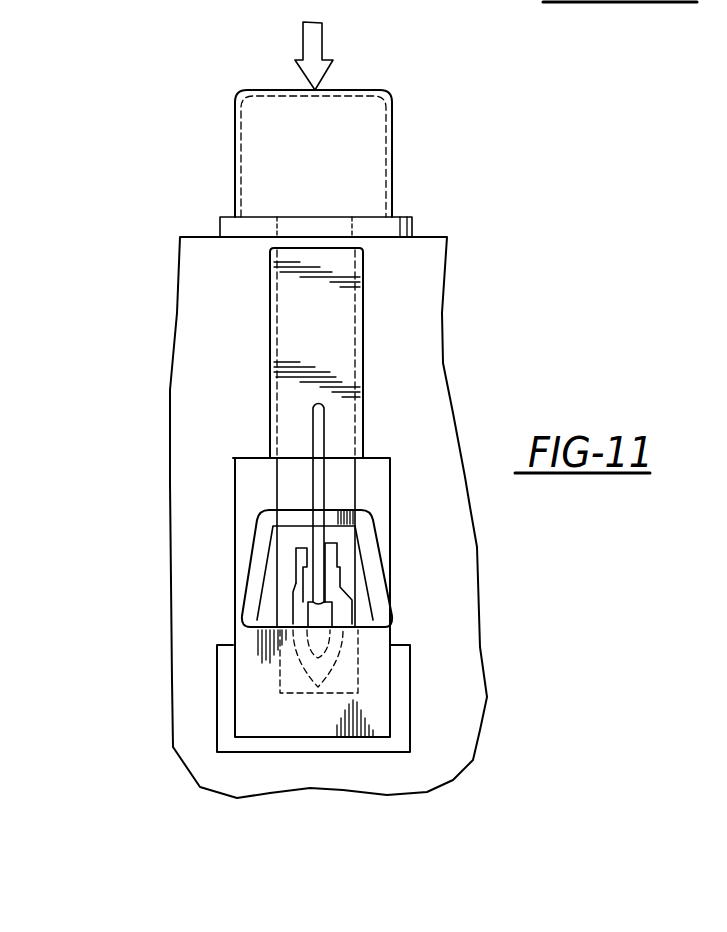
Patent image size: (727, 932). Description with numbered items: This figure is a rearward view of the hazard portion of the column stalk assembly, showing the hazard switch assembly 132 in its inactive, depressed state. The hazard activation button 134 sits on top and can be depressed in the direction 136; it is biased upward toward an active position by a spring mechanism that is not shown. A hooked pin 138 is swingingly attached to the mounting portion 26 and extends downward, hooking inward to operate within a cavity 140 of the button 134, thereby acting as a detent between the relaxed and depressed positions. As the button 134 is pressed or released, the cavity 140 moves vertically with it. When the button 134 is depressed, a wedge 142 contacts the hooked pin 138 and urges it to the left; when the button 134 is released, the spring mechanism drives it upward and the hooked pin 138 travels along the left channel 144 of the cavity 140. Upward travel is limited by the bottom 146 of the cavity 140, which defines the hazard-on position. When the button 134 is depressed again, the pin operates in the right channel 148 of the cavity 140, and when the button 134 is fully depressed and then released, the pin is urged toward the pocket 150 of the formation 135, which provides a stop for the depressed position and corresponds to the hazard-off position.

The mounting portion 26 is at (197, 386).
The connector assembly 132 is at (177, 151).
The hazard activation button 134 is at (382, 177).
The formation 135 is at (318, 624).
The direction 136 is at (313, 35).
The hooked pin 138 is at (318, 428).
The cavity 140 is at (337, 560).
The wedge 142 is at (296, 560).
The left channel 144 is at (293, 607).
The bottom 146 is at (318, 670).
The right channel 148 is at (333, 622).
The pocket 150 is at (345, 608).